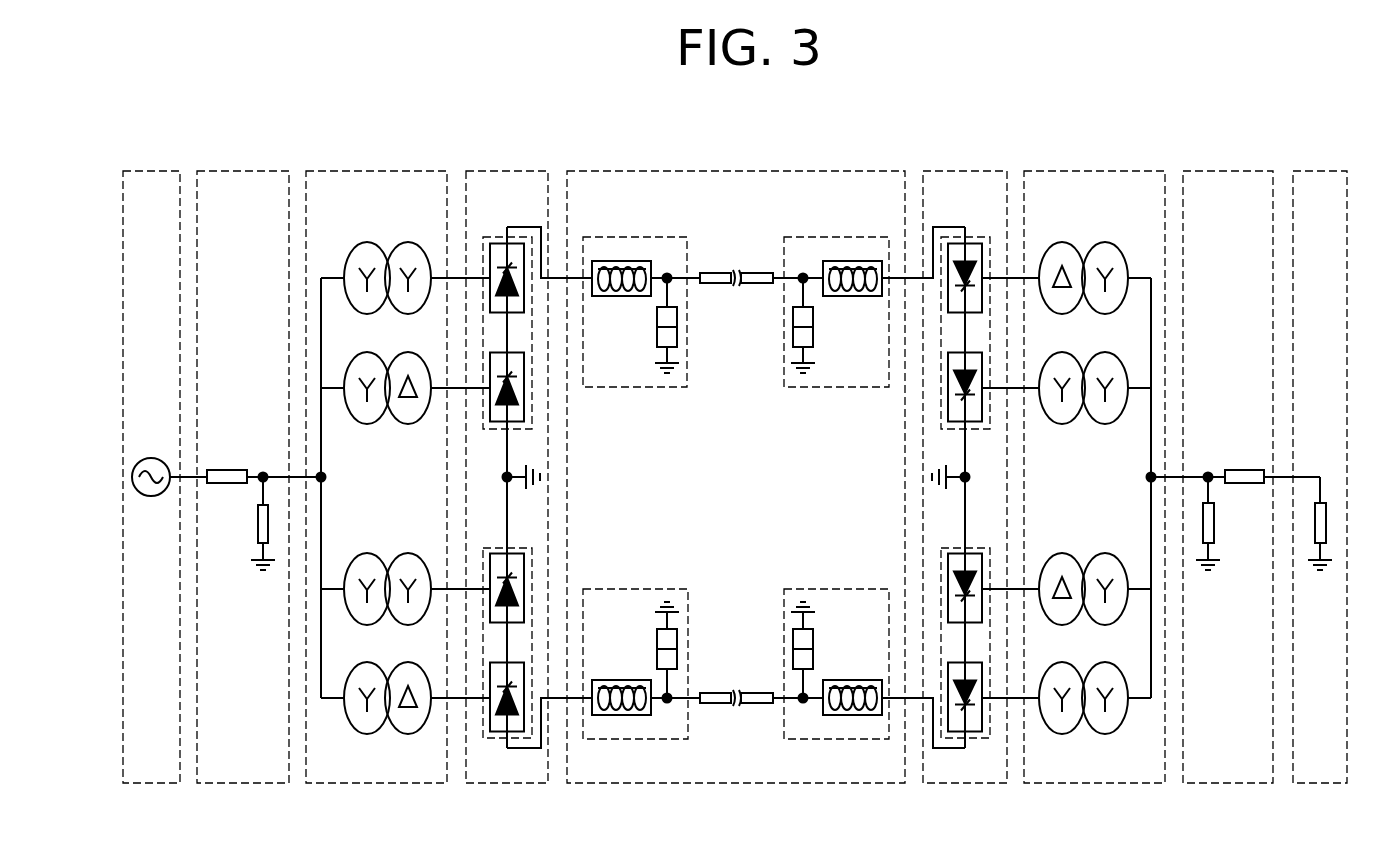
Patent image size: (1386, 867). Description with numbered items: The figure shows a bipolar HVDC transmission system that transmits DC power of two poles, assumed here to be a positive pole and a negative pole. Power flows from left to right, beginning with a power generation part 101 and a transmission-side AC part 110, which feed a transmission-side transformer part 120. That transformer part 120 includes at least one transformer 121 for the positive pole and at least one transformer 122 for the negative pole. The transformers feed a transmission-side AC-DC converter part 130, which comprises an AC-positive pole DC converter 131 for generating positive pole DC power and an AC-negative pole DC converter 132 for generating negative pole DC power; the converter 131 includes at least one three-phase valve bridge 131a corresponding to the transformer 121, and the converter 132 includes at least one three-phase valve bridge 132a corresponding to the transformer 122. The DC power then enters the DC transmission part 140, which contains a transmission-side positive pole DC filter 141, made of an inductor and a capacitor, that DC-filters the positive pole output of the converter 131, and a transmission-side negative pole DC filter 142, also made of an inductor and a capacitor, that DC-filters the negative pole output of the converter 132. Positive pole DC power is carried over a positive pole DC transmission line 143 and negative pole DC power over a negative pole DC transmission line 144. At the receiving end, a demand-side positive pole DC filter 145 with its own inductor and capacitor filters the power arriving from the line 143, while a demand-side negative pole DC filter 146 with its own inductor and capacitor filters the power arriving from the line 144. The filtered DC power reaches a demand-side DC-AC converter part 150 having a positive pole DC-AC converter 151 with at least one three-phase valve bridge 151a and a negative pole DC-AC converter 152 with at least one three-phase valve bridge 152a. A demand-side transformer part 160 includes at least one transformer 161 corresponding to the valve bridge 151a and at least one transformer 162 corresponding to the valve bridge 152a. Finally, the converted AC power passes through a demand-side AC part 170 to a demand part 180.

The power generation part 101 is at (152, 171).
The transmission-side alternating current (AC) part 110 is at (245, 171).
The transmission-side transformer part 120 is at (378, 171).
The transformer for a positive pole 121 is at (367, 242).
The transformer for a negative pole 122 is at (367, 553).
The transmission-side AC-DC converter part 130 is at (508, 171).
The AC-positive pole DC converter 131 is at (488, 237).
The AC-negative pole DC converter 132 is at (507, 643).
The three-phase valve bridge 131a is at (520, 237).
The three-phase valve bridge 132a is at (524, 560).
The DC transmission part 140 is at (737, 171).
The transmission-side positive pole DC filter 141 is at (637, 237).
The transmission-side negative pole DC filter 142 is at (637, 589).
The positive pole DC transmission line 143 is at (718, 273).
The negative pole DC transmission line 144 is at (717, 693).
The demand-side positive pole DC filter 145 is at (838, 237).
The demand-side negative pole DC filter 146 is at (838, 589).
The demand-side DC-AC converter part 150 is at (965, 171).
The positive pole DC-AC converter 151 is at (985, 237).
The negative pole DC-AC converter 152 is at (965, 643).
The three-phase valve bridge 151a is at (955, 237).
The three-phase valve bridge 152a is at (948, 562).
The demand-side transformer part 160 is at (1097, 171).
The transformer 161 is at (1063, 242).
The transformer 162 is at (1063, 553).
The demand-side AC part 170 is at (1223, 171).
The demand part 180 is at (1321, 171).